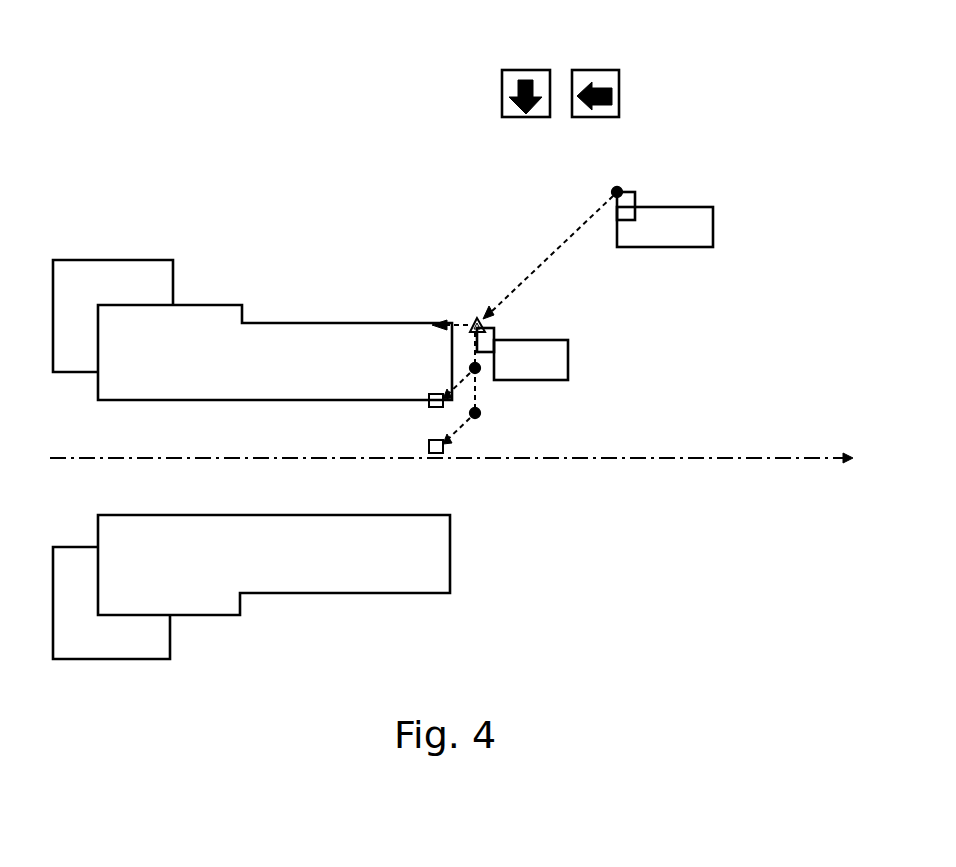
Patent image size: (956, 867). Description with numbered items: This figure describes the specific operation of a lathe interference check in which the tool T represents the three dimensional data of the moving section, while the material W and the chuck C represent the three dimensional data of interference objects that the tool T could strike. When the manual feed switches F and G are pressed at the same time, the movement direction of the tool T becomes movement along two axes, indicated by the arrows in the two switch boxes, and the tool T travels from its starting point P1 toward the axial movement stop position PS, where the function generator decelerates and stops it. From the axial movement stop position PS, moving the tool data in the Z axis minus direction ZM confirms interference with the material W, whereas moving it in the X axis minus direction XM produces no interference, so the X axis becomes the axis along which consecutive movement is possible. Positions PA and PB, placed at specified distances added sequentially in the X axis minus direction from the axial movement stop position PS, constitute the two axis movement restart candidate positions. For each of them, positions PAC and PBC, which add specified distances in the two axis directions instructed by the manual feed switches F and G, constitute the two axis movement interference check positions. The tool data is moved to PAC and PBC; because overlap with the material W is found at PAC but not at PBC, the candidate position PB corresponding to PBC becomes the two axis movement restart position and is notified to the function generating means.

The chuck C is at (143, 260).
The material W is at (292, 323).
The manual feed switch G is at (525, 70).
The manual feed switch F is at (600, 70).
The tool T is at (690, 205).
The tool start point P1 is at (620, 188).
The axial movement stop position PS is at (475, 323).
The Z axis minus direction ZM is at (470, 325).
The X axis minus direction XM is at (474, 340).
The two axis movement restart candidate position PA is at (468, 372).
The two axis movement restart candidate position PB is at (462, 420).
The two axis movement interference check position PAC is at (428, 404).
The two axis movement interference check position PBC is at (428, 448).